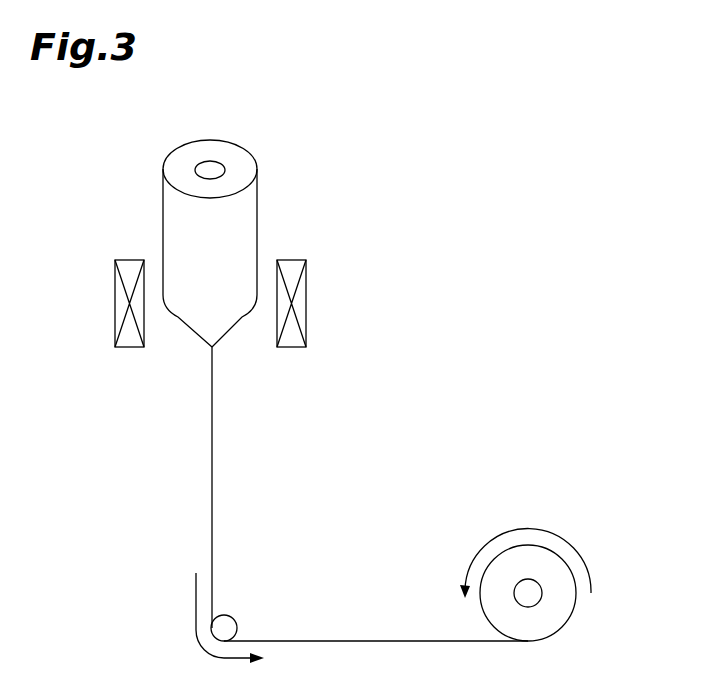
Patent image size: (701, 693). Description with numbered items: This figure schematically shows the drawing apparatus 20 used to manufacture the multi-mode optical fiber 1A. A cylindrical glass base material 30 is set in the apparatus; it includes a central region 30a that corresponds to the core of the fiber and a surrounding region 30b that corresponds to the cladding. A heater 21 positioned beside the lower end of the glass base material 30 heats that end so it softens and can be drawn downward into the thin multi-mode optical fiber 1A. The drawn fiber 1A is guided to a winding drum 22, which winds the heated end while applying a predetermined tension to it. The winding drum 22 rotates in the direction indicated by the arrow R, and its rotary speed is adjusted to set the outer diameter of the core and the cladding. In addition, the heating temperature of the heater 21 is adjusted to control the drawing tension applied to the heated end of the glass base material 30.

The glass base material 30 is at (258, 195).
The region corresponding to the core 30a is at (210, 170).
The region corresponding to the cladding 30b is at (187, 162).
The heater 21 is at (115, 303).
The multi-mode optical fiber 1A is at (222, 507).
The winding drum 22 is at (555, 615).
The rotation direction arrow R is at (548, 530).
The drawing apparatus 20 is at (622, 141).